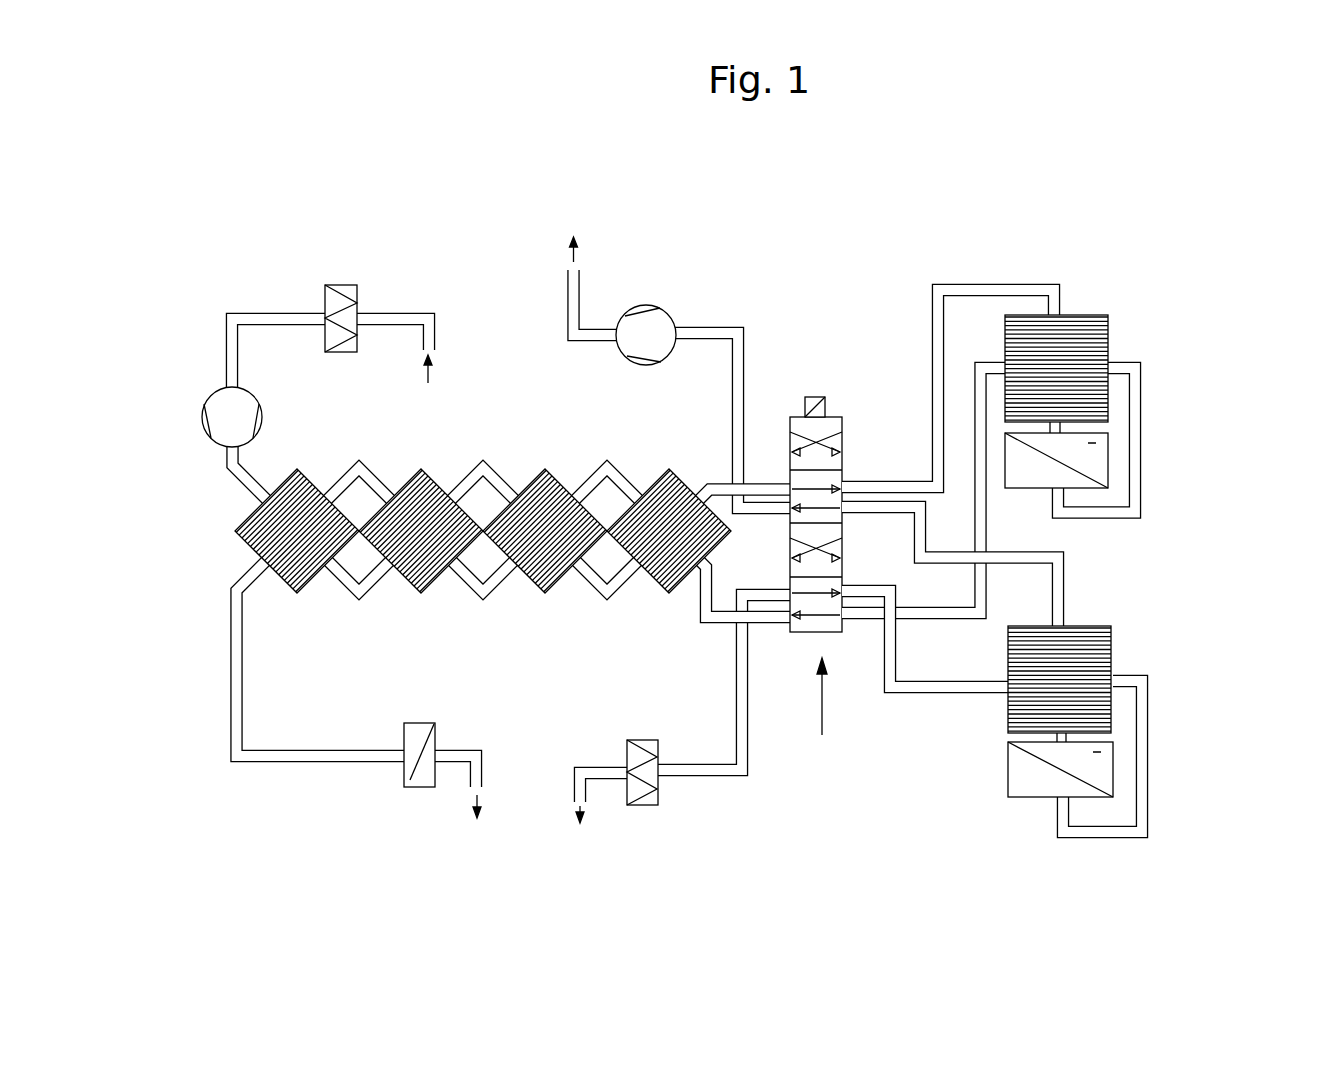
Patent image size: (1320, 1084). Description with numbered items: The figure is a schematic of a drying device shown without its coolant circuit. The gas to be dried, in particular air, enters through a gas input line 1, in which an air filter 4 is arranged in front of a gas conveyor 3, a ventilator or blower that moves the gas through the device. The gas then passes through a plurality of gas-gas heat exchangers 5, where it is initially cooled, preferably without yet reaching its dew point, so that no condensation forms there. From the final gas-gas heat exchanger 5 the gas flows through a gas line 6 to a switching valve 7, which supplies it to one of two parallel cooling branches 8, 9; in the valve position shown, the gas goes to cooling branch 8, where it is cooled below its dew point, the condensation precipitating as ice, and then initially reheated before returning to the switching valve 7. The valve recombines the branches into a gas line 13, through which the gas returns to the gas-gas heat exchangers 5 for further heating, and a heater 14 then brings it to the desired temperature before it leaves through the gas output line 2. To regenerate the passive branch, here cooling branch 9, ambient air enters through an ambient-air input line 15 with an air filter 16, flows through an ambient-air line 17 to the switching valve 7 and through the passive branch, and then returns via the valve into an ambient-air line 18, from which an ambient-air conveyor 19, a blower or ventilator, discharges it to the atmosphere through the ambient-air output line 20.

The gas input line 1 is at (395, 316).
The gas output line 2 is at (453, 753).
The gas conveyor 3 is at (232, 413).
The air filter 4 is at (333, 290).
The gas-gas heat exchanger 5 is at (255, 540).
The gas line 6 is at (762, 487).
The switching valve 7 is at (821, 709).
The cooling branch 8 is at (1061, 450).
The cooling branch 9 is at (1047, 725).
The gas line 13 is at (718, 625).
The heater 14 is at (418, 777).
The ambient-air input line 15 is at (611, 777).
The air filter 16 is at (650, 805).
The ambient-air line 17 is at (774, 595).
The ambient-air line 18 is at (707, 333).
The ambient-air conveyor 19 is at (635, 325).
The ambient-air output line 20 is at (570, 310).